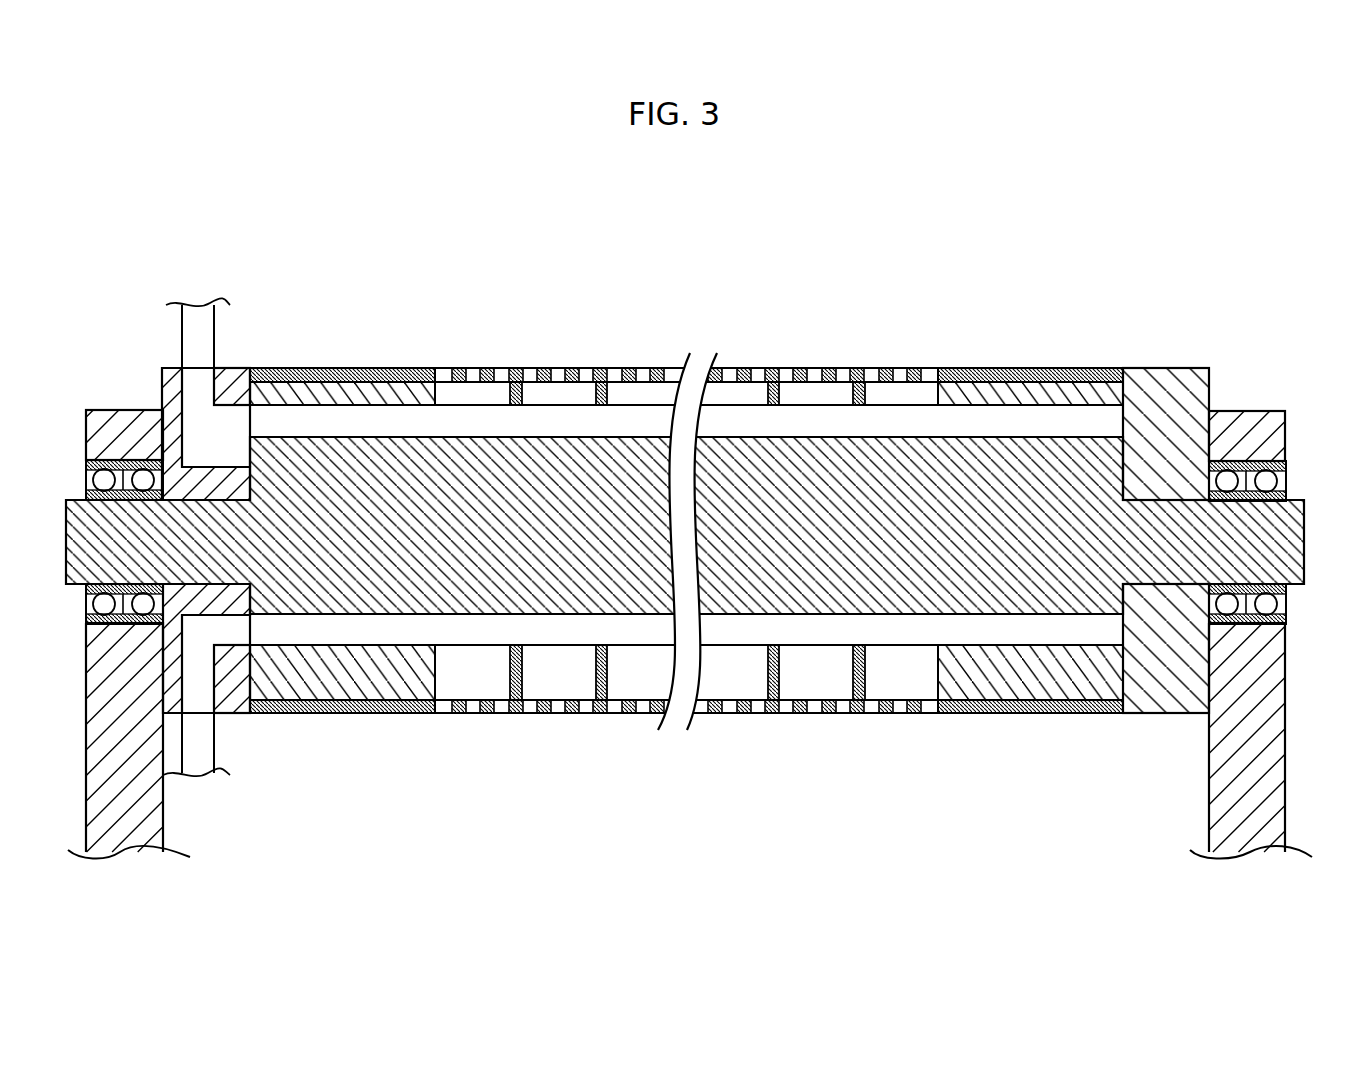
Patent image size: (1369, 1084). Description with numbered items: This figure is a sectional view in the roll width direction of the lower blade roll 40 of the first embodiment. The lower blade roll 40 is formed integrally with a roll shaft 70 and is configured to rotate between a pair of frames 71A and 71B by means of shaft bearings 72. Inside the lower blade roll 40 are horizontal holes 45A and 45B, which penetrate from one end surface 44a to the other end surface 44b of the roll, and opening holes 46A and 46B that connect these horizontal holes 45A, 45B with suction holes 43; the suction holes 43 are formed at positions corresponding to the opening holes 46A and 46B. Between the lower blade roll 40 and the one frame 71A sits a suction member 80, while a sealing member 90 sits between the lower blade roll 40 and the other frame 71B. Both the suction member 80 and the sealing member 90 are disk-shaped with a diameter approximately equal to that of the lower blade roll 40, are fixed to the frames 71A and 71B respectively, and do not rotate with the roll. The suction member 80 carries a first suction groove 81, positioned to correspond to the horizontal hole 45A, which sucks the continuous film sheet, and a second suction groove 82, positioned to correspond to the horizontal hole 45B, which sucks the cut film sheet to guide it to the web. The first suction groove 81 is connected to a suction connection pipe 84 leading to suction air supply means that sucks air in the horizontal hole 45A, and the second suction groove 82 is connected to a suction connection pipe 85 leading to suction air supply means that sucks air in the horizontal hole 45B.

The lower blade roll 40 is at (1084, 222).
The suction holes 43 is at (468, 372).
The one end surface 44a is at (235, 368).
The other end surface 44b is at (1132, 393).
The horizontal hole 45A is at (365, 418).
The horizontal hole 45B is at (402, 630).
The opening holes 46A is at (531, 395).
The opening holes 46B is at (568, 687).
The roll shaft 70 is at (807, 565).
The frame 71A is at (122, 833).
The frame 71B is at (1255, 833).
The shaft bearings 72 is at (88, 482).
The suction member 80 is at (177, 548).
The first suction groove 81 is at (200, 367).
The second suction groove 82 is at (215, 700).
The suction connection pipe 84 is at (200, 320).
The suction connection pipe 85 is at (207, 780).
The sealing member 90 is at (1202, 508).